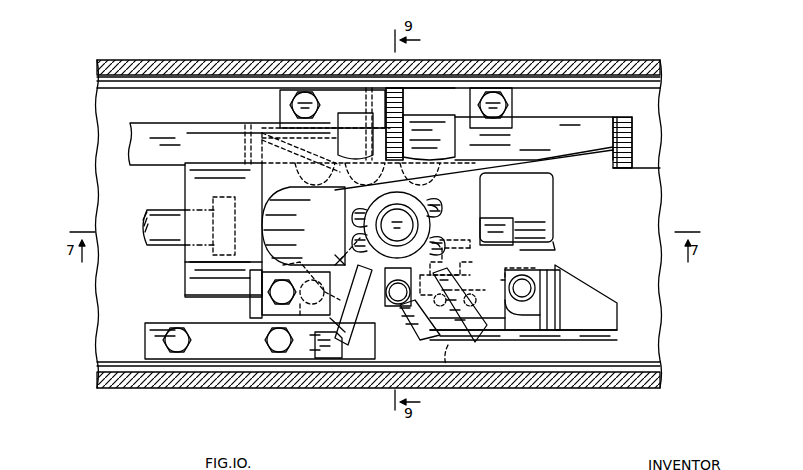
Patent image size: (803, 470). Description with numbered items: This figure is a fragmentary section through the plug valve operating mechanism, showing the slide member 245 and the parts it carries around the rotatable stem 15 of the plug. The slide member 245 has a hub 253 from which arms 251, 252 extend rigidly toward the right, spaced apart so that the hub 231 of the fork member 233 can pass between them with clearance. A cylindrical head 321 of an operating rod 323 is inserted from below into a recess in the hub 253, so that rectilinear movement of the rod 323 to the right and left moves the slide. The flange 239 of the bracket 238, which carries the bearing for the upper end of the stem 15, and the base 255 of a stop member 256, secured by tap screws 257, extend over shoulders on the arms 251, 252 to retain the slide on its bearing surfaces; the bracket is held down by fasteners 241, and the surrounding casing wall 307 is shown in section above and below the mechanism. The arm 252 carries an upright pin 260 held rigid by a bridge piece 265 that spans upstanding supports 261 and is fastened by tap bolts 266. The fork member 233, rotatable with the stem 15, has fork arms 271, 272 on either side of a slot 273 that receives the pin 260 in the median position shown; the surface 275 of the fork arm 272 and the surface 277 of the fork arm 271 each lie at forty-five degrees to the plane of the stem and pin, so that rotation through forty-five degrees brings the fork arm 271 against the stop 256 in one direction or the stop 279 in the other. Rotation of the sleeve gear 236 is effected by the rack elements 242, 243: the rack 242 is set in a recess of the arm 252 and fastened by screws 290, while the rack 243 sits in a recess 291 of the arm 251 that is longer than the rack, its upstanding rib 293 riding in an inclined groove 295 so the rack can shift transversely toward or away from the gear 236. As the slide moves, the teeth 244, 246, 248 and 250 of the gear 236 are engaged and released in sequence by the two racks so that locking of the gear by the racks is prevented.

The stem 15 is at (392, 226).
The hub 231 is at (432, 215).
The fork member 233 is at (436, 240).
The gear 236 is at (470, 195).
The bracket 238 is at (432, 140).
The flange 239 is at (437, 95).
The bolt 241 is at (303, 100).
The rack element 242 is at (530, 325).
The rack element 243 is at (250, 130).
The tooth 244 is at (442, 260).
The slide member 245 is at (183, 189).
The tooth 246 is at (401, 264).
The tooth 248 is at (347, 205).
The tooth 250 is at (408, 182).
The arm 251 is at (557, 135).
The arm 252 is at (595, 295).
The hub 253 is at (188, 270).
The base 255 is at (230, 360).
The stop member 256 is at (320, 358).
The tap screws 257 is at (265, 341).
The upright pin 260 is at (305, 280).
The upstanding support 261 is at (505, 280).
The bridge piece 265 is at (252, 274).
The tap bolts 266 is at (268, 290).
The fork arm 271 is at (476, 340).
The fork arm 272 is at (380, 345).
The slot 273 is at (384, 292).
The surface 275 is at (365, 395).
The surface 277 is at (480, 260).
The stop 279 is at (514, 230).
The screws 290 is at (444, 300).
The recess 291 is at (244, 145).
The upstanding rib 293 is at (304, 140).
The inclined groove 295 is at (375, 103).
The wall 307 is at (232, 60).
The cylindrical head 321 is at (224, 196).
The operating rod 323 is at (147, 233).